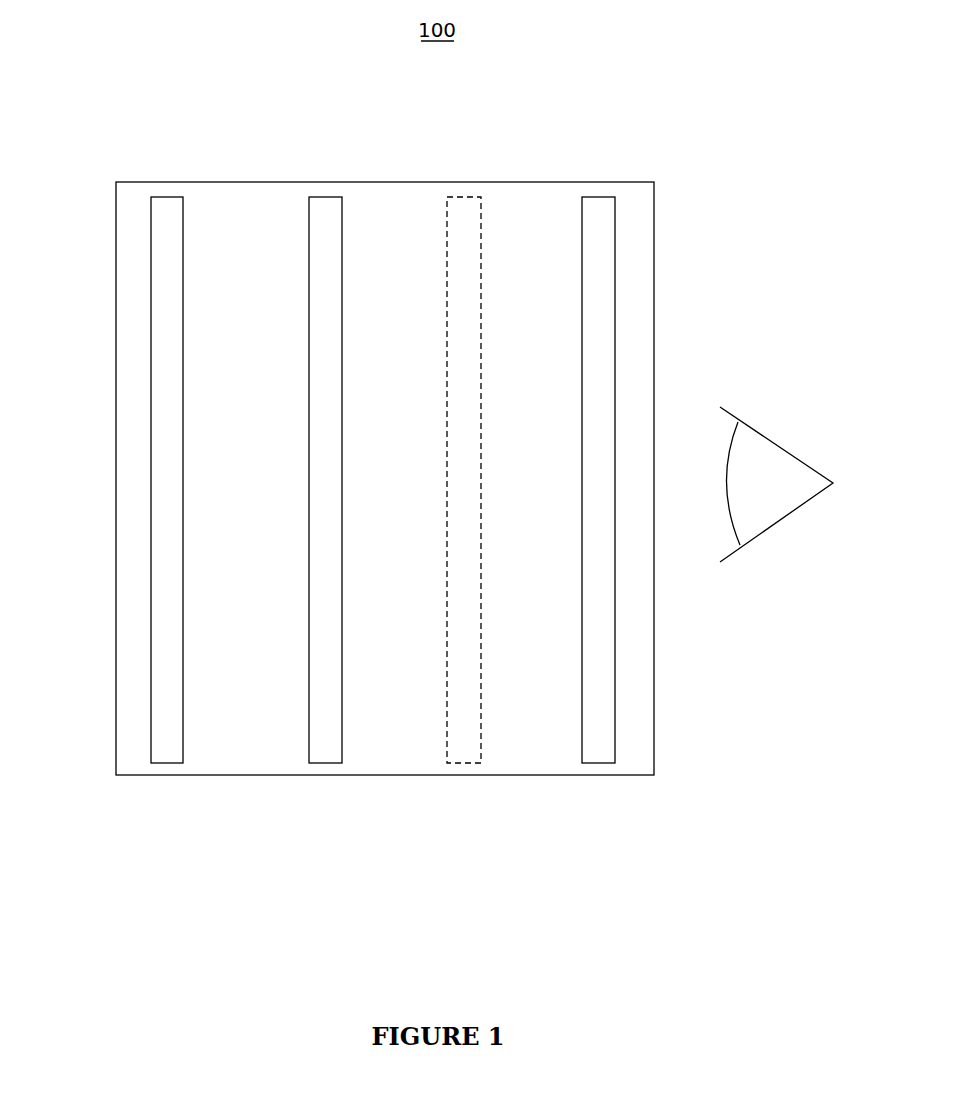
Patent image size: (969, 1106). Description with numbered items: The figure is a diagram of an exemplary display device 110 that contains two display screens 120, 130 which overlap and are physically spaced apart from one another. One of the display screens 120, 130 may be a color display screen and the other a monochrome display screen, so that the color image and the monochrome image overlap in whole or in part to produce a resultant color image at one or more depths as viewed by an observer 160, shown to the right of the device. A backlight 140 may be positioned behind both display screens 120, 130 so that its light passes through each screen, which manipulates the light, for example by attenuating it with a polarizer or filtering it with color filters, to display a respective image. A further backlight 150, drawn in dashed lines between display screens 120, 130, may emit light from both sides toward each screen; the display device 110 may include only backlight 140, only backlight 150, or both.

The display device 110 is at (116, 729).
The display screen 120 is at (326, 205).
The display screen 130 is at (598, 205).
The backlight 140 is at (168, 205).
The backlight 150 is at (463, 205).
The observer 160 is at (765, 462).